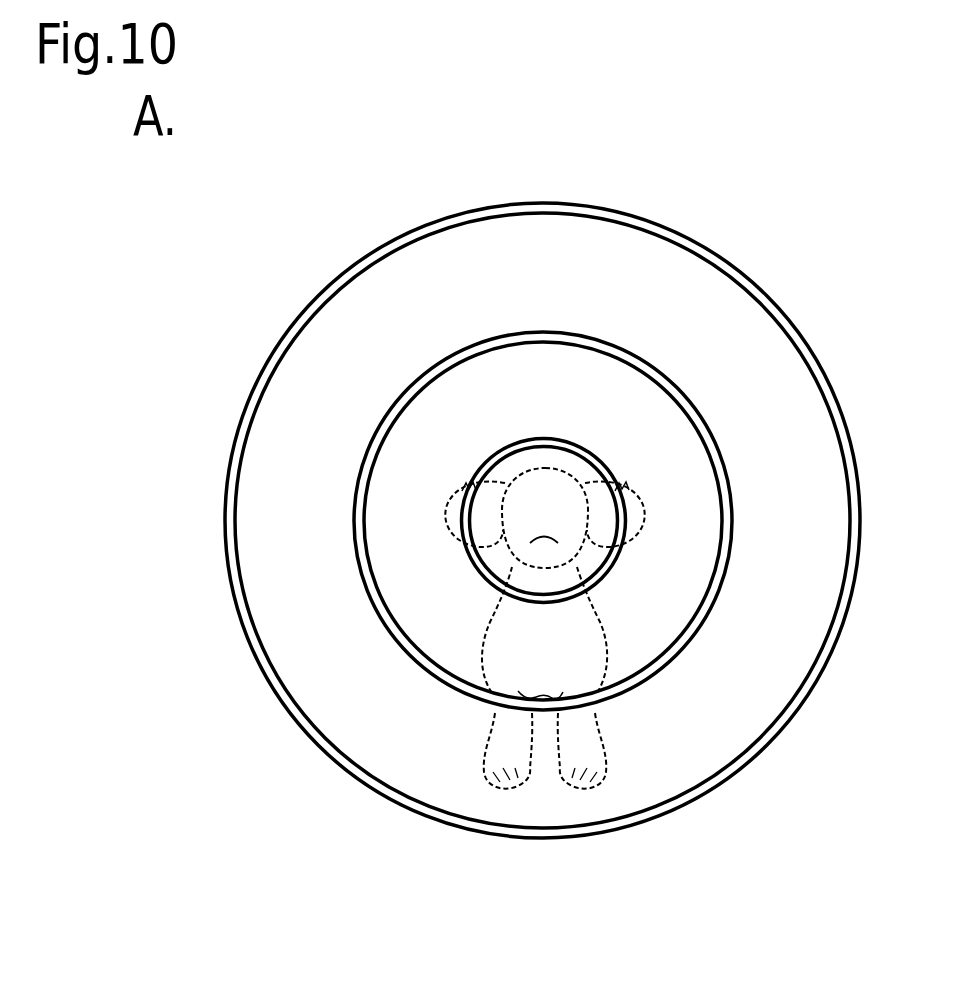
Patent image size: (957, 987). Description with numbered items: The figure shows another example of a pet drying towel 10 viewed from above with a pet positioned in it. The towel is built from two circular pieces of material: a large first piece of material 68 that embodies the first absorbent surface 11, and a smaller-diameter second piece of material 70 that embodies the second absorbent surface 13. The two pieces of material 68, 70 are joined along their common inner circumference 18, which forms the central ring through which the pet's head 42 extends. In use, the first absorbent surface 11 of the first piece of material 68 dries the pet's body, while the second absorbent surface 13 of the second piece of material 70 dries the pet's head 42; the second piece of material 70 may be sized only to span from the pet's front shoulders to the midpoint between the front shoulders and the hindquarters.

The pet drying towel 10 is at (525, 517).
The first absorbent surface 11 is at (308, 625).
The second absorbent surface 13 is at (538, 382).
The common inner circumference 18 is at (620, 553).
The pet's head 42 is at (555, 482).
The first piece of material 68 is at (373, 738).
The second piece of material 70 is at (687, 443).